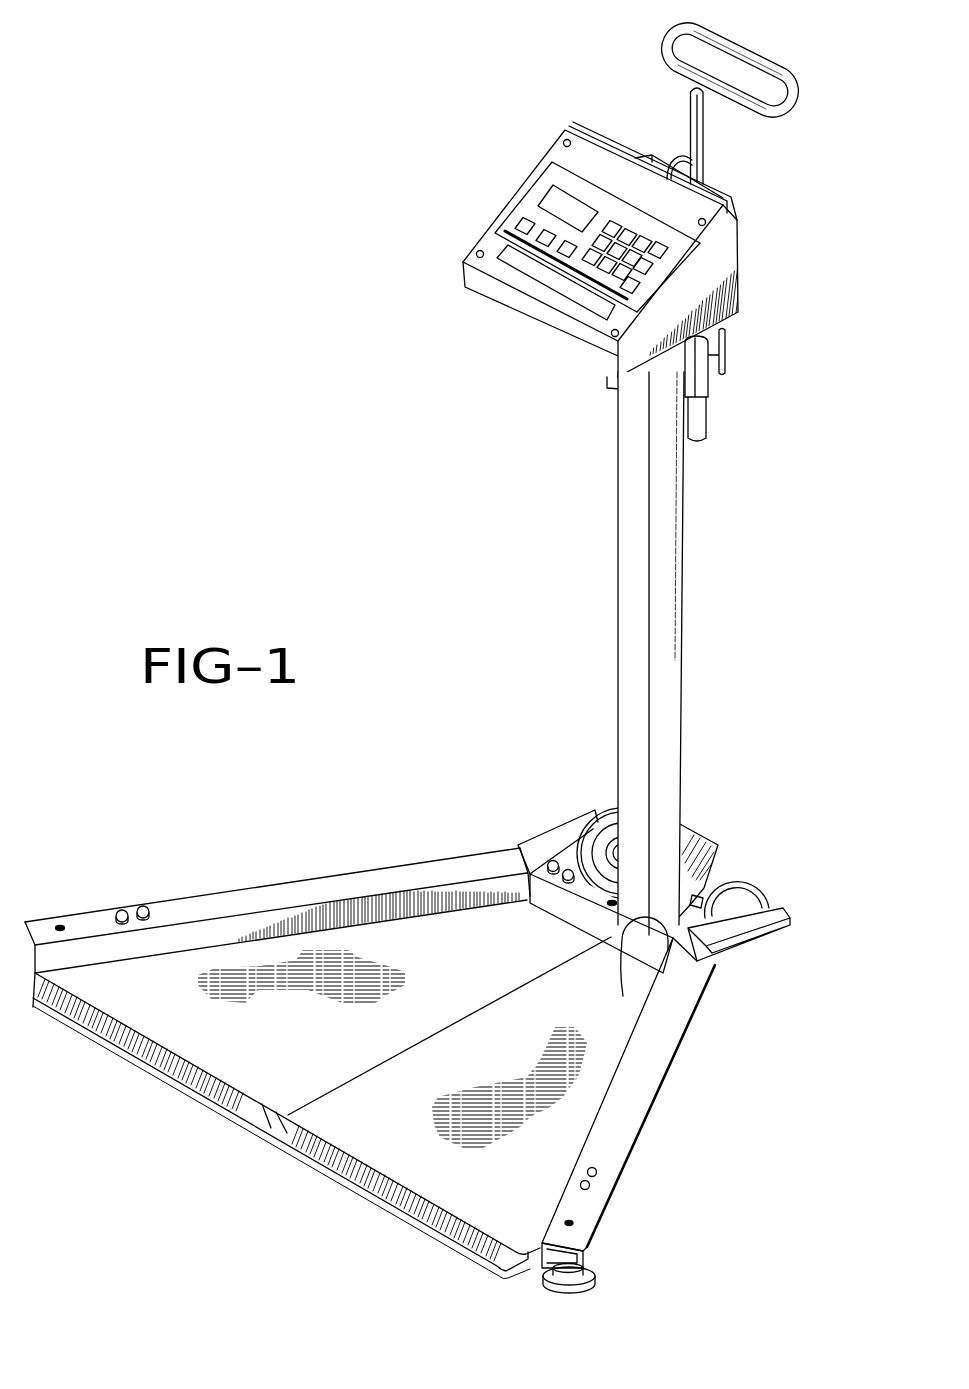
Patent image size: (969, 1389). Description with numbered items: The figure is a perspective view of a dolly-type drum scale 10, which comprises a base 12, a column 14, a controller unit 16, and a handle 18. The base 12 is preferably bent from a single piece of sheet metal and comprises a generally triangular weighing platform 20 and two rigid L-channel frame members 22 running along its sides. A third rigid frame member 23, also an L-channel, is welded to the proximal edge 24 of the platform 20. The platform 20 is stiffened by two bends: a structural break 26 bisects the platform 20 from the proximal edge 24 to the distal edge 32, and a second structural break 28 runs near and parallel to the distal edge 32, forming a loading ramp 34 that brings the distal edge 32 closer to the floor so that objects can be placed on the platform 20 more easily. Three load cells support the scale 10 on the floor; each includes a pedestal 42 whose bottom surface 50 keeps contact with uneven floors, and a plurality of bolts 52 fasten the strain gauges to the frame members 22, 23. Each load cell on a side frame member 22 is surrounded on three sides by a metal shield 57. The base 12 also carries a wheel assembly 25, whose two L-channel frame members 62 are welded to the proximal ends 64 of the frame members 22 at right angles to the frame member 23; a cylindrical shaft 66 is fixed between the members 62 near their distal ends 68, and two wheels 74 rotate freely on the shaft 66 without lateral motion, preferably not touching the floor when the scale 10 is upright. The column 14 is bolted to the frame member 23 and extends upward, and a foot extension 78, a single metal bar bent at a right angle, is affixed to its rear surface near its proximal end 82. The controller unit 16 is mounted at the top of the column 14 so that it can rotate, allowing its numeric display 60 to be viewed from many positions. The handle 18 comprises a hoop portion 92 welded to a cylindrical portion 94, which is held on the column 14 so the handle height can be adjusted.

The dolly-type drum scale 10 is at (477, 686).
The base 12 is at (231, 880).
The column 14 is at (610, 500).
The controller unit 16 is at (486, 209).
The handle 18 is at (656, 38).
The weighing platform 20 is at (188, 1038).
The rigid frame members 22 is at (185, 900).
The third rigid frame member 23 is at (598, 892).
The proximal edge 24 is at (610, 950).
The wheel assembly 25 is at (772, 961).
The structural break 26 is at (372, 1057).
The second structural break 28 is at (258, 1108).
The distal edge 32 is at (178, 1087).
The loading ramp 34 is at (318, 1152).
The pedestal 42 is at (608, 1296).
The bottom surface 50 is at (555, 1291).
The bolts 52 is at (553, 861).
The metal shield 57 is at (603, 1222).
The numeric display 60 is at (560, 197).
The L-channel frame members 62 is at (538, 838).
The proximal ends 64 is at (518, 858).
The cylindrical shaft 66 is at (703, 900).
The distal ends 68 is at (782, 907).
The wheels 74 is at (600, 822).
The foot extension 78 is at (700, 827).
The proximal end 82 is at (623, 996).
The hoop portion 92 is at (752, 42).
The cylindrical portion 94 is at (708, 152).